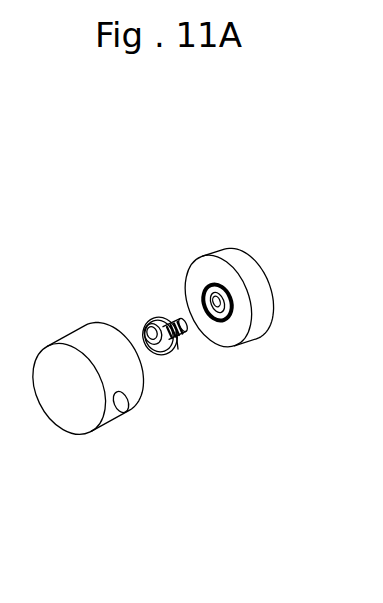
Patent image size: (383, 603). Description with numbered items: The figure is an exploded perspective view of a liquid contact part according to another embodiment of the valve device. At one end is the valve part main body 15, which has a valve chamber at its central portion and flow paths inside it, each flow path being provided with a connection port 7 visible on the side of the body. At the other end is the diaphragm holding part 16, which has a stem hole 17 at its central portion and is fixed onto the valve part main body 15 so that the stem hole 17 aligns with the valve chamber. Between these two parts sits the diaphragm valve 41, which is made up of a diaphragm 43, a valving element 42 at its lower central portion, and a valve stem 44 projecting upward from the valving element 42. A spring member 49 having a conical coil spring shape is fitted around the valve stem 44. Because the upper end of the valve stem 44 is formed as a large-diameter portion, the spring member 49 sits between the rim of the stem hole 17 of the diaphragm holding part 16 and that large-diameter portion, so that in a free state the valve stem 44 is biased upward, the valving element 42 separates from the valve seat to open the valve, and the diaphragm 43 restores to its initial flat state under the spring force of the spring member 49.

The connection port 7 is at (123, 415).
The valve part main body 15 is at (123, 415).
The diaphragm holding part 16 is at (257, 339).
The stem hole 17 is at (205, 285).
The diaphragm valve 41 is at (164, 331).
The valving element 42 is at (140, 324).
The diaphragm 43 is at (163, 356).
The valve stem 44 is at (178, 316).
The spring member 49 is at (178, 349).